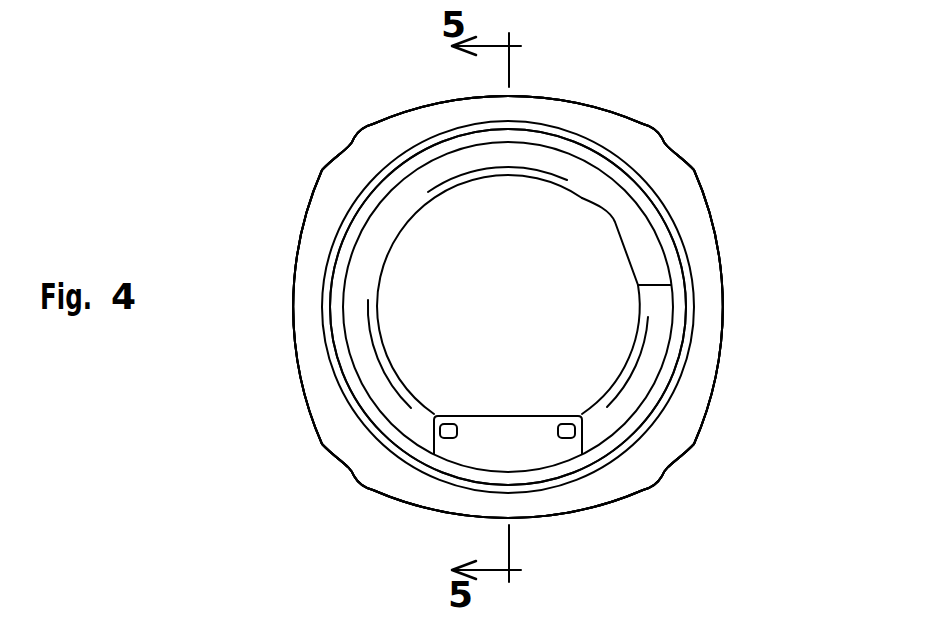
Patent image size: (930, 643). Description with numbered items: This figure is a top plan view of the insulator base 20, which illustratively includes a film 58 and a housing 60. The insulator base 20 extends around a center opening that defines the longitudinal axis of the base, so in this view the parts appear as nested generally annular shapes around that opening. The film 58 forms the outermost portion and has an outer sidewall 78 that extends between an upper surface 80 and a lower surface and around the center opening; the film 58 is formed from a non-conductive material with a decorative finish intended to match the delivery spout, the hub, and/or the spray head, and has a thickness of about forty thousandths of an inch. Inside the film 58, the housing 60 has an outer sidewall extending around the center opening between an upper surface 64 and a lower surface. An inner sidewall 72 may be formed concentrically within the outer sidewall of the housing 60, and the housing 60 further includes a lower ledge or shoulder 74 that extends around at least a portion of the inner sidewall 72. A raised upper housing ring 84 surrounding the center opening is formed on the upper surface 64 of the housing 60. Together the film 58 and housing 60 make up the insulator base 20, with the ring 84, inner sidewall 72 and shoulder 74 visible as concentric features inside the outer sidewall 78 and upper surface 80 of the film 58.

The insulator base 20 is at (742, 123).
The film 58 is at (318, 416).
The housing 60 is at (338, 275).
The upper surface 64 is at (683, 238).
The inner sidewall 72 is at (378, 208).
The lower ledge or shoulder 74 is at (447, 167).
The outer sidewall 78 is at (705, 417).
The upper surface 80 is at (708, 327).
The raised upper housing ring 84 is at (585, 152).